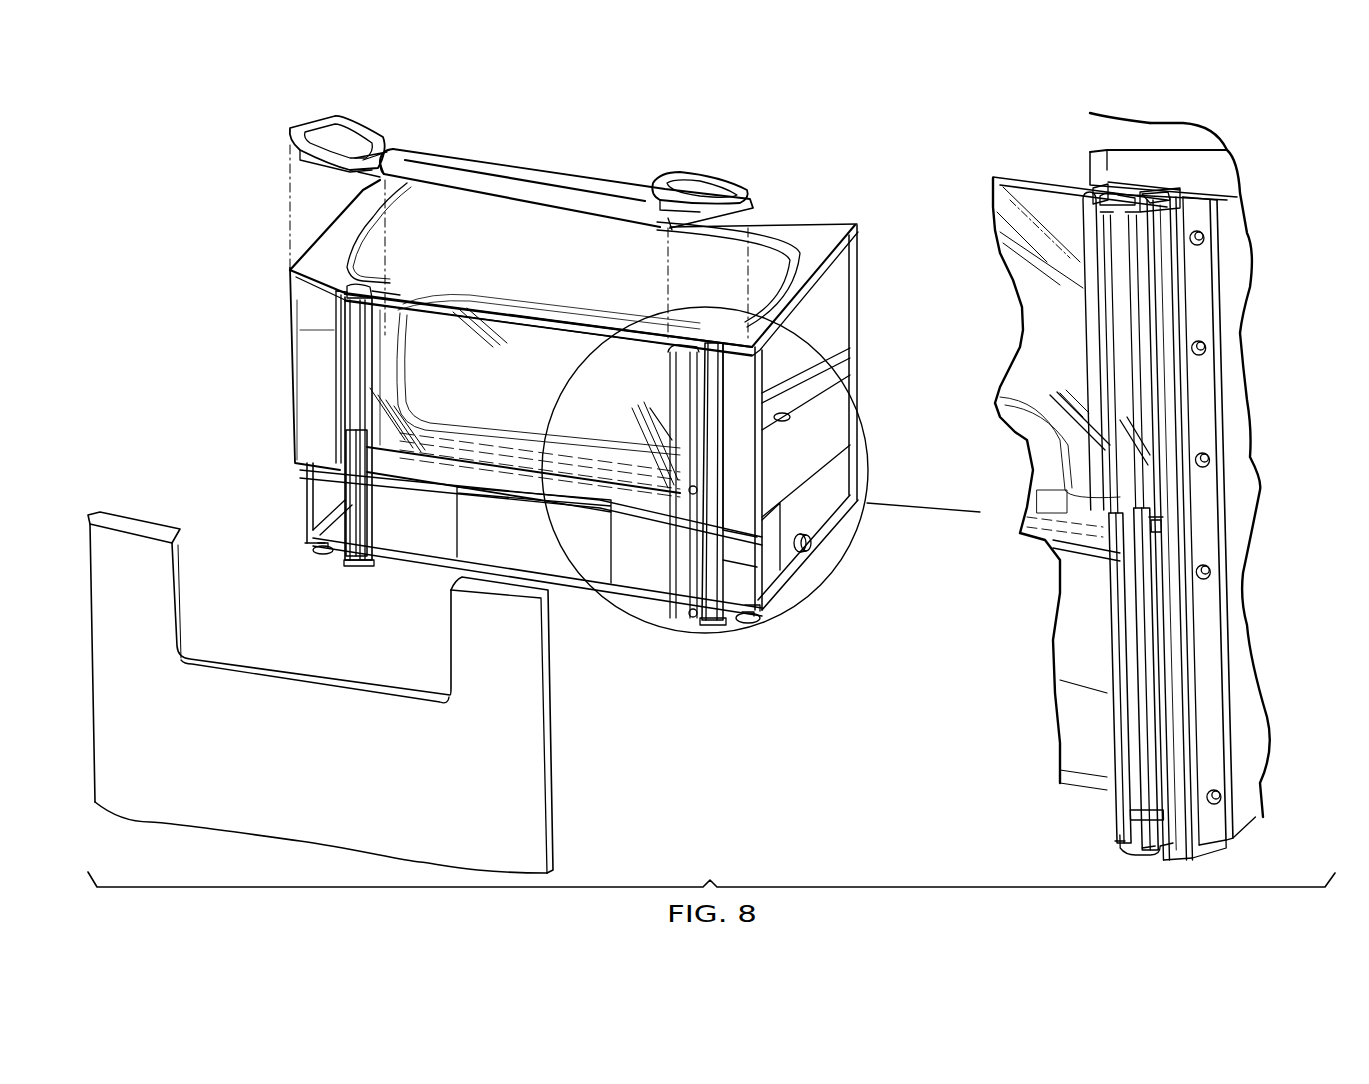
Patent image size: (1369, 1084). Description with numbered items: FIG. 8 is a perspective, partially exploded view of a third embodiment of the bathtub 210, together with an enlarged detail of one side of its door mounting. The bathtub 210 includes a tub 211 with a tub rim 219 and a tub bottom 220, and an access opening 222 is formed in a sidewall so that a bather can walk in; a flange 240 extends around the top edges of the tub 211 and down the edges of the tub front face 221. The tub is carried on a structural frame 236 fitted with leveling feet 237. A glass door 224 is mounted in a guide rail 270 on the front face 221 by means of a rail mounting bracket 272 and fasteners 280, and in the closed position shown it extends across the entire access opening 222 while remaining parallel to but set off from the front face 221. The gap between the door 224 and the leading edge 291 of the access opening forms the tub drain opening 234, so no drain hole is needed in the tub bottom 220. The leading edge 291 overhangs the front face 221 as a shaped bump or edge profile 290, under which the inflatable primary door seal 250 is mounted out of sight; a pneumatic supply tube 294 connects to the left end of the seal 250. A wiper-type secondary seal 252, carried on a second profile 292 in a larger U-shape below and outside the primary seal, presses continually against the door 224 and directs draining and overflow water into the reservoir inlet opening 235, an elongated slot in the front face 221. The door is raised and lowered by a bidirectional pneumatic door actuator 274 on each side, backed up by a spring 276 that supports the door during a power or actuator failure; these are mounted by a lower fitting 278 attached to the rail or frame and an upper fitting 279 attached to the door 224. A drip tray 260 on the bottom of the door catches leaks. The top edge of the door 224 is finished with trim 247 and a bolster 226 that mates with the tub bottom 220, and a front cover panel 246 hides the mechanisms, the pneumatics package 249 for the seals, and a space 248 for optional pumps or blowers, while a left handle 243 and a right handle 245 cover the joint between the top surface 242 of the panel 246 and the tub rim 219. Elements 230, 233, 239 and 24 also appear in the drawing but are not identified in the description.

The bathtub 210 is at (542, 128).
The tub 211 is at (760, 245).
The tub rim 219 is at (360, 213).
The tub bottom 220 is at (577, 316).
The tub front face 221 is at (701, 550).
The access opening 222 is at (433, 285).
The door 224 is at (767, 338).
The bolster 226 is at (548, 185).
The frame 230 is at (840, 463).
The knob 233 is at (812, 553).
The tub drain opening 234 is at (407, 414).
The reservoir inlet opening 235 is at (495, 450).
The structural frame 236 is at (852, 330).
The leveling feet 237 is at (752, 625).
The shelf 239 is at (782, 410).
The flange 240 is at (290, 312).
The top surface 242 is at (155, 520).
The left handle 243 is at (345, 125).
The right handle 245 is at (697, 173).
The front cover panel 246 is at (180, 804).
The trim 247 is at (388, 176).
The space 248 is at (415, 527).
The pneumatics package 249 is at (552, 568).
The primary door seal 250 is at (370, 310).
The secondary seal 252 is at (358, 427).
The drip tray 260 is at (686, 586).
The guide rail 270 is at (1165, 195).
The rail mounting bracket 272 is at (1215, 700).
The door actuator 274 is at (1150, 775).
The spring 276 is at (1110, 803).
The lower fitting 278 is at (1122, 850).
The upper fitting 279 is at (1100, 187).
The fasteners 280 is at (1215, 452).
The edge profile 290 is at (1085, 213).
The leading edge 291 is at (580, 442).
The second profile 292 is at (1155, 195).
The pneumatic supply tube 294 is at (355, 292).
The panel edge 24 is at (415, 301).